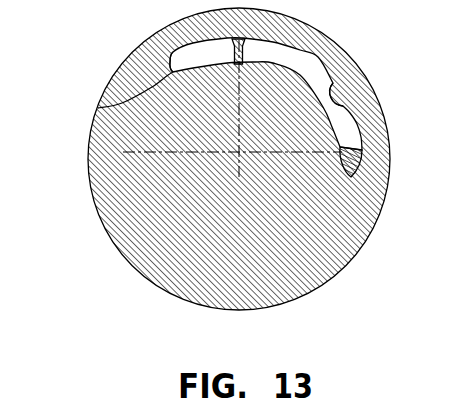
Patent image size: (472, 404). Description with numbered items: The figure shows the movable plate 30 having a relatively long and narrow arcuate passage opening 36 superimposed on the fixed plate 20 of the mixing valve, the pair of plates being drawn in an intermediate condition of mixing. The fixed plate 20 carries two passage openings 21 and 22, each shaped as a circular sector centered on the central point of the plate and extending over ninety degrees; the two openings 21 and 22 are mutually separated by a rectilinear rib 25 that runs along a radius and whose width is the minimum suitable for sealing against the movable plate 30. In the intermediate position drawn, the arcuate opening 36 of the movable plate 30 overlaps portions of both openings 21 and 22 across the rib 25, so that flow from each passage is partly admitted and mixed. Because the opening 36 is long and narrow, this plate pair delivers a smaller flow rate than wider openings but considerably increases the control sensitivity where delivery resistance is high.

The fixed plate 20 is at (372, 203).
The passage opening 21 is at (100, 107).
The passage opening 22 is at (285, 62).
The rib 25 is at (164, 36).
The movable plate 30 is at (150, 230).
The passage opening 36 is at (350, 104).